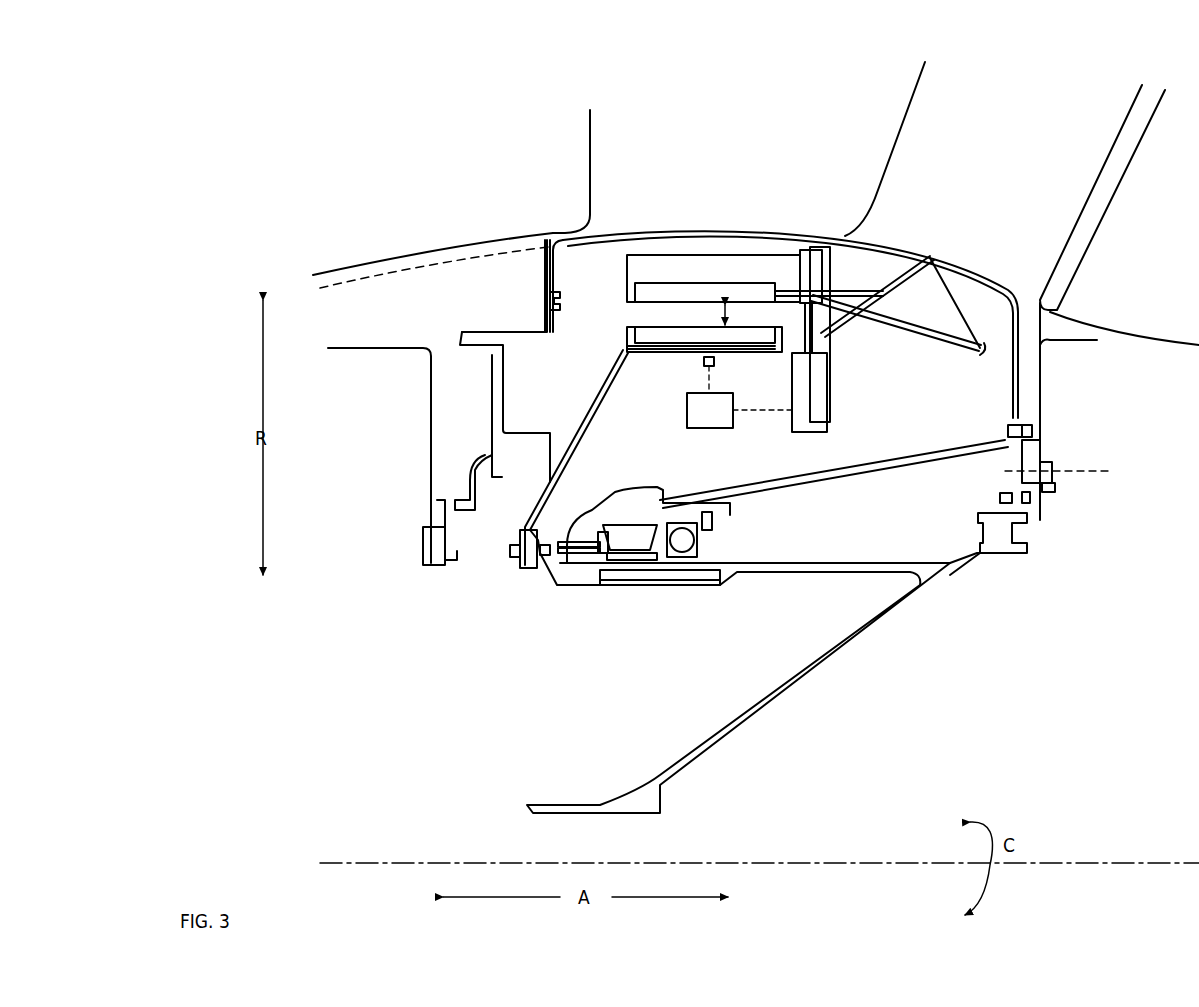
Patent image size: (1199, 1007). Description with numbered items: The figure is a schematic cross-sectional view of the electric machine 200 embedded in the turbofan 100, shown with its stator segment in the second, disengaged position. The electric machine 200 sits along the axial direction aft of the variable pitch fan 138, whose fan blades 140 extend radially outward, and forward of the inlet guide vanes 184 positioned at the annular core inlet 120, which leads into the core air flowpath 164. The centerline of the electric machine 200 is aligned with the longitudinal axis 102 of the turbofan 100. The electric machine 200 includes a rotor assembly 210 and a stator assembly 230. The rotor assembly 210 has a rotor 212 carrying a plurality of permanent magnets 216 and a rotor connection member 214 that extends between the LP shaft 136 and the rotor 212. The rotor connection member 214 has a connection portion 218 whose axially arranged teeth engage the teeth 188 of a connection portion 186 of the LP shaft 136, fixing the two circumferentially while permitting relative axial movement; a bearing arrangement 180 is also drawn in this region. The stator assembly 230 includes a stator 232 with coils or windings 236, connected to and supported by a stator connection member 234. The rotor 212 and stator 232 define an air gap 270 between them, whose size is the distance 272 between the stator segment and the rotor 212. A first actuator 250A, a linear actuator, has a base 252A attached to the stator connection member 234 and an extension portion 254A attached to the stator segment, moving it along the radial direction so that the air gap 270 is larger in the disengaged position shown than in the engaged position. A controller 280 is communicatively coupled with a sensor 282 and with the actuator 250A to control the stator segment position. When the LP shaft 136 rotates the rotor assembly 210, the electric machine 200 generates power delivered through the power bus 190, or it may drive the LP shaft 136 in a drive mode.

The turbofan 100 is at (742, 93).
The variable pitch fan 138 is at (615, 145).
The fan blades 140 is at (557, 197).
The annular core inlet 120 is at (858, 135).
The inlet guide vanes 184 is at (993, 197).
The core air flowpath 164 is at (1159, 264).
The electric machine 200 is at (700, 243).
The stator 232 is at (651, 268).
The coils or windings 236 is at (738, 290).
The stator assembly 230 is at (790, 263).
The distance 272 is at (728, 312).
The extension portion 254A is at (828, 318).
The stator connection member 234 is at (912, 278).
The power bus 190 is at (948, 334).
The magnets 216 is at (625, 338).
The rotor 212 is at (748, 355).
The air gap 270 is at (625, 322).
The sensor 282 is at (702, 362).
The controller 280 is at (728, 422).
The first actuator 250A is at (835, 383).
The base 252A is at (812, 406).
The rotor assembly 210 is at (640, 368).
The rotor connection member 214 is at (590, 420).
The teeth 188 is at (640, 575).
The connection portion 186 is at (720, 562).
The LP shaft 136 is at (850, 561).
The bearing housing 180 is at (665, 585).
The connection portion 218 is at (608, 593).
The longitudinal axis 102 is at (832, 860).